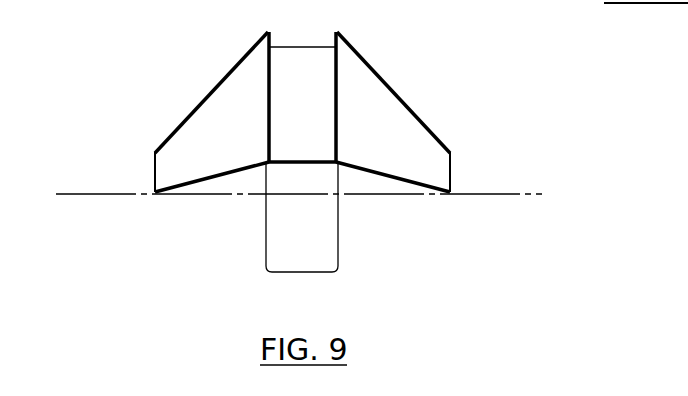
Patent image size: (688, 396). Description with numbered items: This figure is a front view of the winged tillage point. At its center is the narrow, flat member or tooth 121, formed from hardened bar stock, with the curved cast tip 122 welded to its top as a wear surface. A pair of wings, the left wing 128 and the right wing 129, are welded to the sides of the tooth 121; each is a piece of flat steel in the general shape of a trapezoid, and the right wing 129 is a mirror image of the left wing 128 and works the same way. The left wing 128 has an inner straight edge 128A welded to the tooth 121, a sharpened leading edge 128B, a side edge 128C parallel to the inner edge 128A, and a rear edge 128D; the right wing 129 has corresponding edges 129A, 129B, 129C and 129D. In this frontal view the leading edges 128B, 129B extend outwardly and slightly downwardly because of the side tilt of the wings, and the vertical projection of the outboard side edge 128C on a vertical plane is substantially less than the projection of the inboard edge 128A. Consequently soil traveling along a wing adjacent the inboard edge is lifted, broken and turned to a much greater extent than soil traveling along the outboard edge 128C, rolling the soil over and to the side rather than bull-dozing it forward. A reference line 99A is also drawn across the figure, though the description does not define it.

The centerline / reference plane 99A is at (523, 194).
The narrow, flat member (tooth) 121 is at (304, 136).
The curved cast upper surface (tip) 122 is at (300, 242).
The left wing 128 is at (436, 136).
The inner straight edge 128A is at (336, 118).
The leading edge 128B is at (420, 183).
The side edge 128C is at (450, 173).
The rear edge 128D is at (358, 53).
The right wing 129 is at (156, 138).
The inner straight edge 129A is at (266, 97).
The leading edge 129B is at (216, 176).
The side edge 129C is at (154, 172).
The rear edge 129D is at (207, 97).